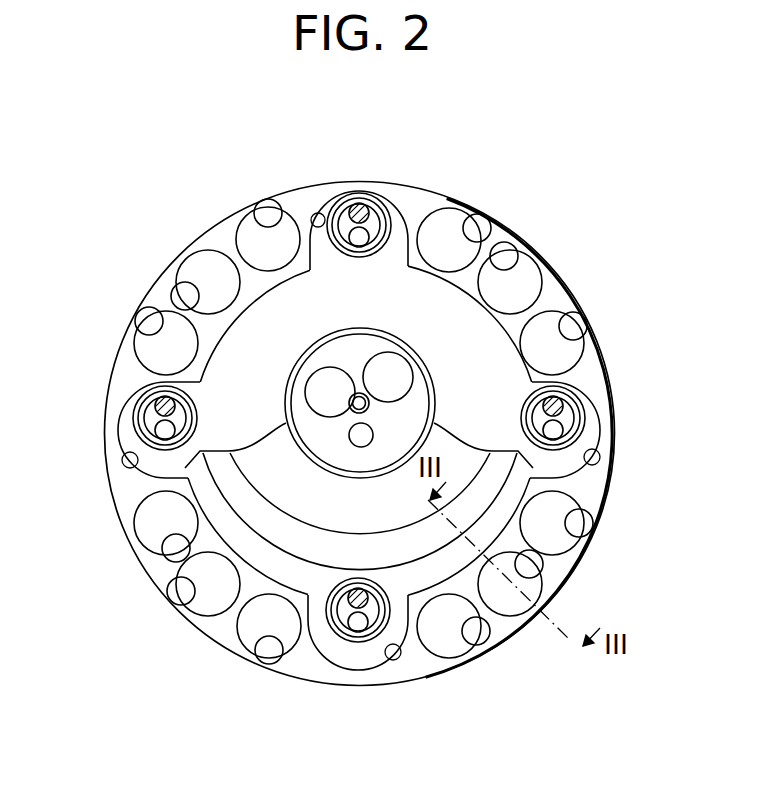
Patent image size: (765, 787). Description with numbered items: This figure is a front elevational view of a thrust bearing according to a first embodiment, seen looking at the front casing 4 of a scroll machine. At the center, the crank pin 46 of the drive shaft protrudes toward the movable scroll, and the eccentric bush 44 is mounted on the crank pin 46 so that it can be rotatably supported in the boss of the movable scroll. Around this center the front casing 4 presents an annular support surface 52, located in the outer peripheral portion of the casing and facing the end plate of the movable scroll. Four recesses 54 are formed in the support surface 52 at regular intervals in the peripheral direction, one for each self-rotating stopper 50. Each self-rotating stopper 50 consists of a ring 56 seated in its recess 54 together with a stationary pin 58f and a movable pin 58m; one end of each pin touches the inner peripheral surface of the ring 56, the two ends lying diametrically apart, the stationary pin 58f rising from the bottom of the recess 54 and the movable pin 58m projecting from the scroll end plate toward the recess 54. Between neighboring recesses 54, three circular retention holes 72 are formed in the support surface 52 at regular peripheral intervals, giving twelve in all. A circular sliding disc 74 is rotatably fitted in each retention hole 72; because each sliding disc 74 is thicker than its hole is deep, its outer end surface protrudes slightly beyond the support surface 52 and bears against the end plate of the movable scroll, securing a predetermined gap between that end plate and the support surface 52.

The front casing 4 is at (106, 521).
The eccentric bush 44 is at (330, 445).
The crank pin 46 is at (322, 392).
The self-rotating stopper 50 is at (364, 203).
The support surface 52 is at (616, 506).
The recess 54 is at (333, 208).
The ring 56 is at (348, 208).
The movable pin 58m is at (359, 212).
The stationary pin 58f is at (367, 236).
The retention hole 72 is at (256, 216).
The sliding disc 74 is at (205, 262).